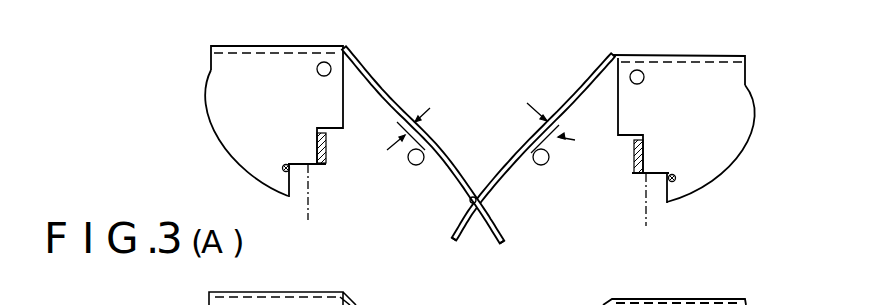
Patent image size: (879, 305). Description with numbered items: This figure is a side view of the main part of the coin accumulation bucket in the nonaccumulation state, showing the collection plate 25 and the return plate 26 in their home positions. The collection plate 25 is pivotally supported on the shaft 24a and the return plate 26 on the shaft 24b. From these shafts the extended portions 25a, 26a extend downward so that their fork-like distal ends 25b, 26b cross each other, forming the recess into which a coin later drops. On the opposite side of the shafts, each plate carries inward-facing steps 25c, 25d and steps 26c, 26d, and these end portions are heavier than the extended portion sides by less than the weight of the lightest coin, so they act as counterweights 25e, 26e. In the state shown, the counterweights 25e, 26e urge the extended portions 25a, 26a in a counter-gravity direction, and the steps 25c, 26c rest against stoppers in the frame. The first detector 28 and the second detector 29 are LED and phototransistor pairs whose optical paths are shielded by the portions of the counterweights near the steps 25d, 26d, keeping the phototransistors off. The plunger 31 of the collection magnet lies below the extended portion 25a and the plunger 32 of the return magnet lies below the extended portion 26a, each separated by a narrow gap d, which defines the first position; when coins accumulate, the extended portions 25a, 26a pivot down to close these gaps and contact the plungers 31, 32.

The shaft 24a is at (325, 62).
The shaft 24b is at (637, 70).
The collection plate 25 is at (267, 108).
The extended portion 25a is at (432, 137).
The fork-like distal end 25b is at (500, 248).
The step 25c is at (327, 134).
The step 25d is at (291, 177).
The counterweight 25e is at (211, 68).
The return plate 26 is at (699, 119).
The extended portion 26a is at (560, 103).
The fork-like distal end 26b is at (455, 245).
The step 26c is at (633, 142).
The step 26d is at (666, 188).
The counterweight 26e is at (745, 85).
The first detector 28 is at (283, 170).
The second detector 29 is at (676, 179).
The plunger 31 is at (415, 166).
The plunger 32 is at (540, 166).
The gap d is at (481, 128).